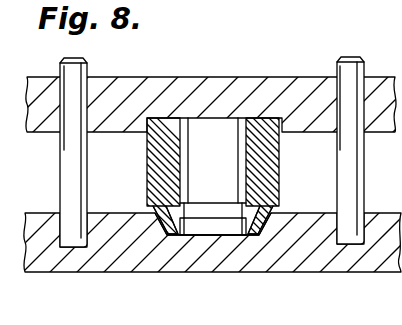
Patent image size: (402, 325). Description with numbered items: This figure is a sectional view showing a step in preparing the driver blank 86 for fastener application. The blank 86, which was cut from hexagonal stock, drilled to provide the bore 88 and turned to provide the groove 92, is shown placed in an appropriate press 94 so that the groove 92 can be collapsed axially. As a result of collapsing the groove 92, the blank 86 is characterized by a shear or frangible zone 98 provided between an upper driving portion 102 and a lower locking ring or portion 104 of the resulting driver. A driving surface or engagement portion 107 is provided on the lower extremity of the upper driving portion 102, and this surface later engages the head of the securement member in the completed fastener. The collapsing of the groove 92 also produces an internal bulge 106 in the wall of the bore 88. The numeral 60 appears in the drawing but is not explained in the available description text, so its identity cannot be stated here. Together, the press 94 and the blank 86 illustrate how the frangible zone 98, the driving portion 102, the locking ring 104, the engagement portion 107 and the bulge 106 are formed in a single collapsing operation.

The die set assembly 60 is at (329, 0).
The blank 86 is at (282, 153).
The bore 88 is at (236, 131).
The groove 92 is at (266, 216).
The press 94 is at (215, 76).
The shear or frangible zone 98 is at (153, 214).
The upper driving portion 102 is at (147, 160).
The lower locking ring 104 is at (171, 236).
The internal bulge 106 is at (188, 197).
The driving surface or engagement portion 107 is at (266, 214).